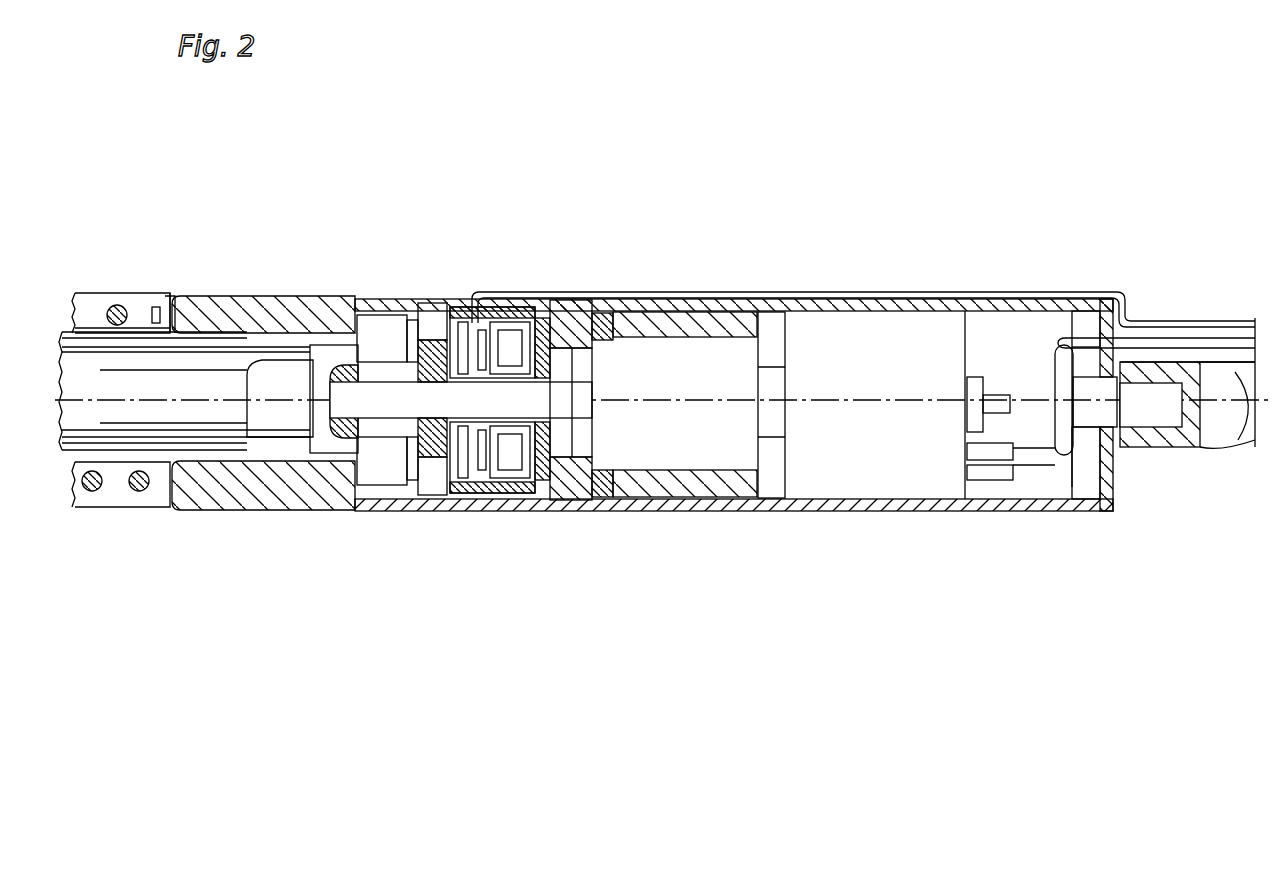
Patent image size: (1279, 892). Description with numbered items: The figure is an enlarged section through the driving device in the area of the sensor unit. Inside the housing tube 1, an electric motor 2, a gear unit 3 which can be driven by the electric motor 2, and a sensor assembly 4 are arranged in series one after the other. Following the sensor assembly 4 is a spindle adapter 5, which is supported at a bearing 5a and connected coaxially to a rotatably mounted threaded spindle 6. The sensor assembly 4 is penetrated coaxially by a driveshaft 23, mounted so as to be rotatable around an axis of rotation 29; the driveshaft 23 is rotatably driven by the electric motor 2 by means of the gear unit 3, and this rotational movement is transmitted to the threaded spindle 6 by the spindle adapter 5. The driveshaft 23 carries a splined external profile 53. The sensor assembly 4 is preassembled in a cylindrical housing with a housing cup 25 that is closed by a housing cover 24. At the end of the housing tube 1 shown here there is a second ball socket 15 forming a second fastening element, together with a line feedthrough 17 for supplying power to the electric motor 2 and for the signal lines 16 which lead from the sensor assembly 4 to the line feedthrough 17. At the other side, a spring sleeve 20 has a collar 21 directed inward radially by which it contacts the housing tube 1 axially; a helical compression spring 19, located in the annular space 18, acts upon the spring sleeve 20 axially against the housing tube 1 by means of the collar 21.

The housing tube 1 is at (870, 507).
The electric motor 2 is at (820, 470).
The gear unit 3 is at (731, 452).
The sensor assembly 4 is at (508, 533).
The spindle adapter 5 is at (380, 457).
The bearing 5a is at (330, 497).
The threaded spindle 6 is at (213, 400).
The second ball socket 15 is at (1222, 415).
The signal lines 16 is at (978, 298).
The line feedthrough 17 is at (1213, 360).
The annular space 18 is at (113, 500).
The helical compression spring 19 is at (143, 500).
The spring sleeve 20 is at (133, 292).
The collar 21 is at (168, 297).
The driveshaft 23 is at (430, 433).
The housing cover 24 is at (453, 490).
The housing cup 25 is at (550, 490).
The axis of rotation 29 is at (183, 390).
The splined external profile 53 is at (558, 390).